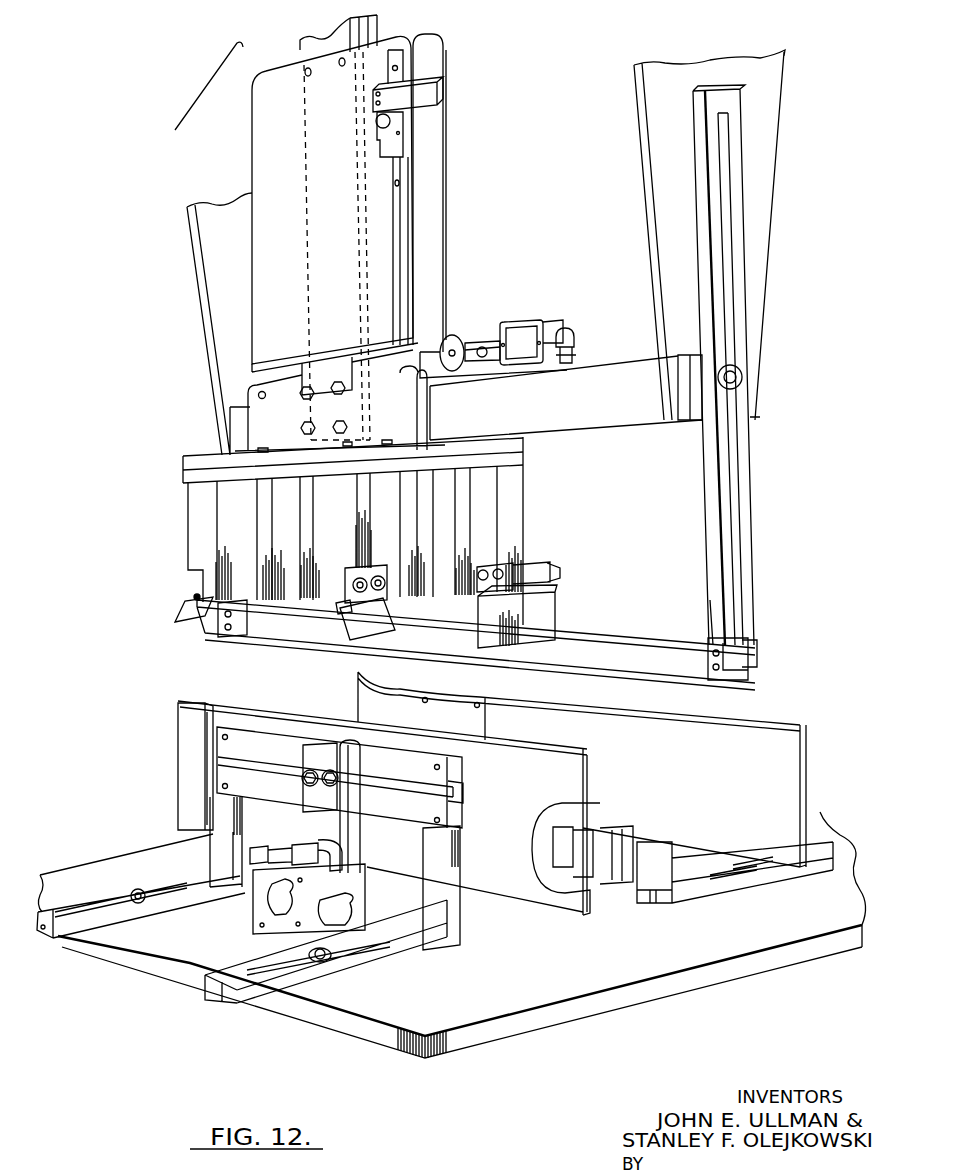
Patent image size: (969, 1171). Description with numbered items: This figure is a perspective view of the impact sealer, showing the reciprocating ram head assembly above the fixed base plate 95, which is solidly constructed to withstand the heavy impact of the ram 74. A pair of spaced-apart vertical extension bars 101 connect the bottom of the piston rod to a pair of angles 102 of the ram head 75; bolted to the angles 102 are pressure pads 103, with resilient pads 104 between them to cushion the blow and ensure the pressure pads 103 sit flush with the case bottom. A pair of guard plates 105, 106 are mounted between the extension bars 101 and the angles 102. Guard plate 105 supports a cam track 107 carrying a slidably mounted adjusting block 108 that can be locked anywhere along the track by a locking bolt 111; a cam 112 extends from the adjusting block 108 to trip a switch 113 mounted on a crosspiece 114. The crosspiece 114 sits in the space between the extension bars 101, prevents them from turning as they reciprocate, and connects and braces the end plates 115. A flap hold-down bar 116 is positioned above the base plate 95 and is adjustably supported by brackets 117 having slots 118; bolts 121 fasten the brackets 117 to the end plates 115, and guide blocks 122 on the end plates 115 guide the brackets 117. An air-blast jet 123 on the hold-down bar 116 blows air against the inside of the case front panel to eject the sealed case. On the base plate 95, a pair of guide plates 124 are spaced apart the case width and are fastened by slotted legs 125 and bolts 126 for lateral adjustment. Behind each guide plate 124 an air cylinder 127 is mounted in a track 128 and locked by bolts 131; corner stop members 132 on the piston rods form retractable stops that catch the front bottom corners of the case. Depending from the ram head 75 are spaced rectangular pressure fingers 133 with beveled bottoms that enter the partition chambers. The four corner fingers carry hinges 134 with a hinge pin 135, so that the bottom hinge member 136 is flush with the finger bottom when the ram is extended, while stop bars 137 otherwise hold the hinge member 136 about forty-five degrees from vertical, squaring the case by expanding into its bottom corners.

The ram 74 is at (206, 84).
The ram head 75 is at (336, 418).
The base plate 95 is at (676, 968).
The vertical extension bars 101 is at (304, 47).
The angles 102 is at (248, 428).
The pressure pads 103 is at (195, 481).
The resilient pads 104 is at (195, 466).
The guard plate 105 is at (265, 158).
The guard plate 106 is at (432, 53).
The cam track 107 is at (400, 207).
The adjusting block 108 is at (402, 141).
The locking bolt 111 is at (376, 122).
The cam 112 is at (440, 87).
The switch 113 is at (520, 322).
The crosspiece 114 is at (586, 422).
The end plates 115 is at (766, 172).
The flap hold-down bar 116 is at (626, 652).
The brackets 117 is at (748, 483).
The slots 118 is at (738, 506).
The bolts 121 is at (742, 376).
The guide blocks 122 is at (688, 356).
The air-blast jet 123 is at (548, 600).
The guide plates 124 is at (662, 735).
The slotted legs 125 is at (145, 910).
The bolts 126 is at (136, 892).
The air cylinder 127 is at (262, 903).
The track 128 is at (262, 767).
The bolts 131 is at (331, 770).
The corner stop members 132 is at (568, 835).
The pressure fingers 133 is at (333, 578).
The hinges 134 is at (318, 625).
The hinge pin 135 is at (195, 597).
The bottom hinge member 136 is at (202, 612).
The stop bars 137 is at (400, 592).